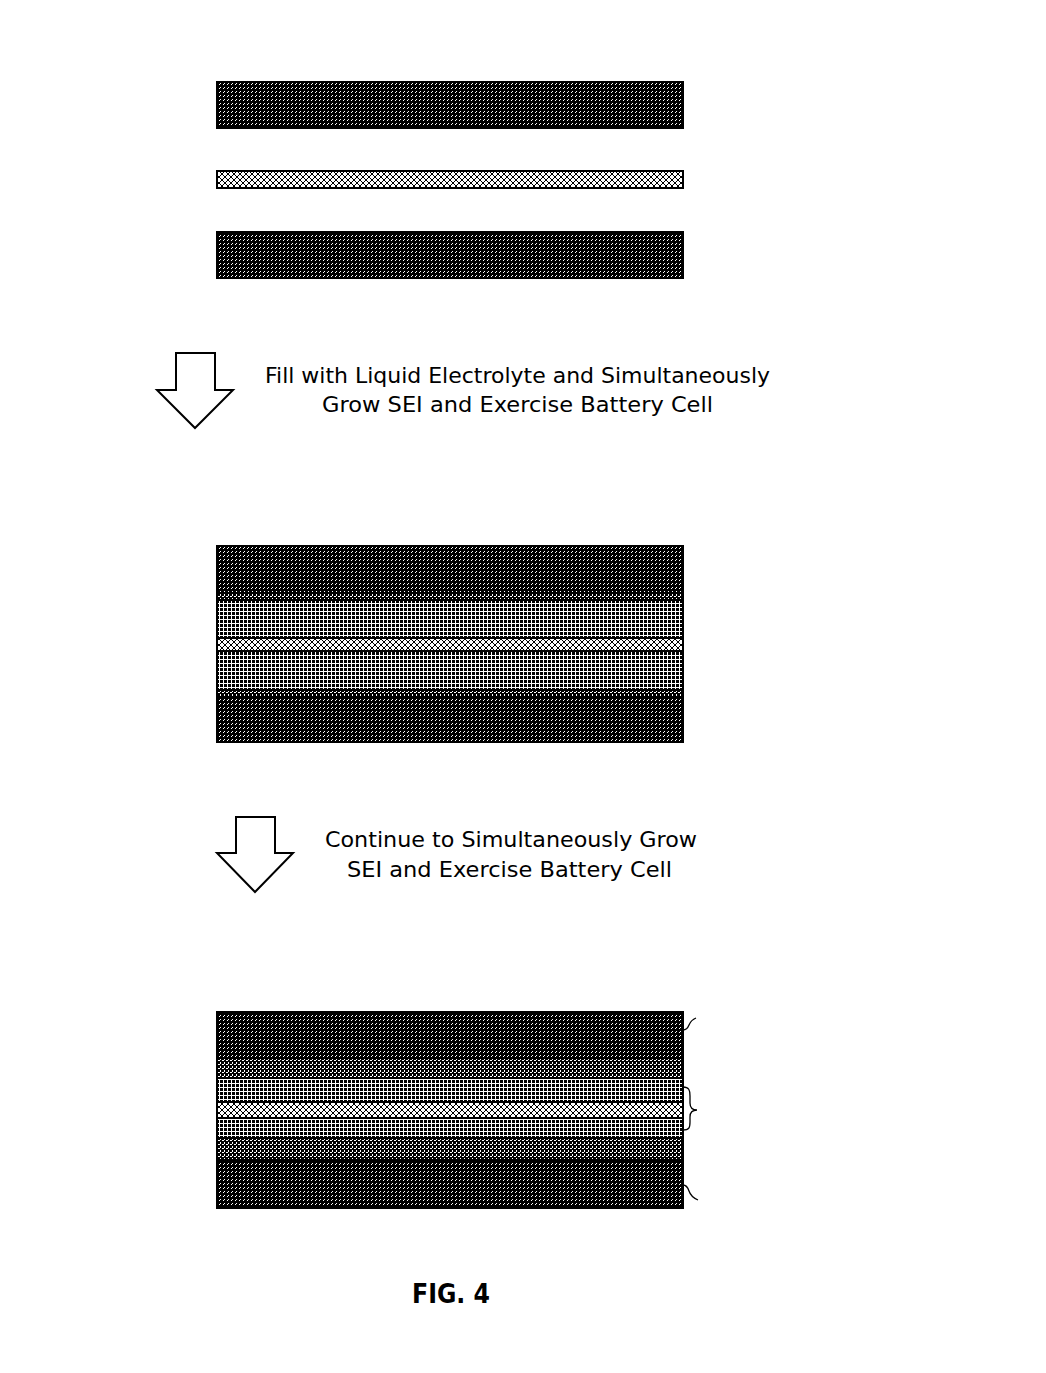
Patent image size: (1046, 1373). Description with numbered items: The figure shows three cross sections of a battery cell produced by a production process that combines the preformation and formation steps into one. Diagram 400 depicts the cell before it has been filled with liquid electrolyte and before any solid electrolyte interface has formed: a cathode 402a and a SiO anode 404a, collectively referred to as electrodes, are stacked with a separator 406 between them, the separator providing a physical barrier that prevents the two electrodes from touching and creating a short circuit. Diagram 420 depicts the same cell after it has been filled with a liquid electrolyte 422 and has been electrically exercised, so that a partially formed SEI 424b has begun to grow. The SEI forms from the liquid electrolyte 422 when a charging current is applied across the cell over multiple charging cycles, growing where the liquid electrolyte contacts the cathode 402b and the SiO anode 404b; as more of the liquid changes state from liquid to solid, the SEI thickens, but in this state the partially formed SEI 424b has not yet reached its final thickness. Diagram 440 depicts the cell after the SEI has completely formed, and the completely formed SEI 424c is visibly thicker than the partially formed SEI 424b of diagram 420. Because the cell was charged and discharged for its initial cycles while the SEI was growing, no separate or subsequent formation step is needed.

The diagram 400 is at (687, 31).
The cathode 402a is at (683, 98).
The separator 406 is at (217, 178).
The SiO anode 404a is at (683, 252).
The diagram 420 is at (687, 496).
The cathode 402b is at (683, 565).
The liquid electrolyte 422 is at (683, 672).
The partially formed SEI 424b is at (210, 693).
The SiO anode 404b is at (683, 720).
The diagram 440 is at (687, 961).
The completely formed SEI 424c is at (210, 1152).